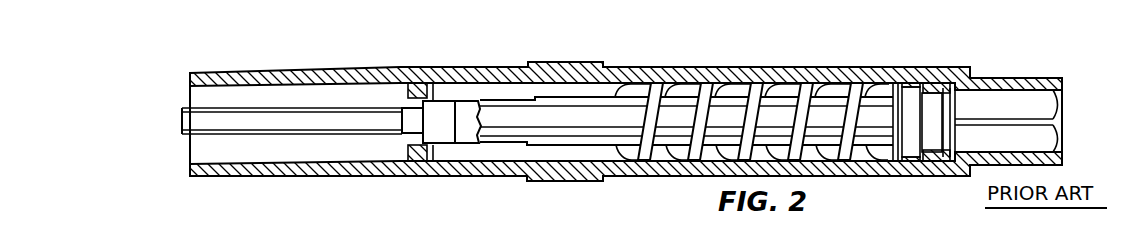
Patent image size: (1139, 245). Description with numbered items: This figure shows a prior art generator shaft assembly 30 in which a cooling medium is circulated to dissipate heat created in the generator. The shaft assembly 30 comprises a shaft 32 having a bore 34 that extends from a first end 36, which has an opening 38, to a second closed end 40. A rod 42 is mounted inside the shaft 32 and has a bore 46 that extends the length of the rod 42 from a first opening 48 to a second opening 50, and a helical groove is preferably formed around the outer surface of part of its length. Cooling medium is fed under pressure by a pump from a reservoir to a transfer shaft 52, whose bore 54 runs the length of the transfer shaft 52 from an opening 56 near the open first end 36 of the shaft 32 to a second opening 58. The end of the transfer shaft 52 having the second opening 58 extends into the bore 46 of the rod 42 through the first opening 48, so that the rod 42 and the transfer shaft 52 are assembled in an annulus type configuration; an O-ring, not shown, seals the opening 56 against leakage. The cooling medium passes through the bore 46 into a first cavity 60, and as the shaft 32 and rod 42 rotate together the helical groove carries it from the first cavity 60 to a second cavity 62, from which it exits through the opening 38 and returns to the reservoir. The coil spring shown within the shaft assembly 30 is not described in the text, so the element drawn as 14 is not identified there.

The shaft assembly 30 is at (186, 60).
The shaft 32 is at (228, 73).
The second cavity 62 is at (277, 92).
The bore 34 is at (290, 153).
The first end 36 is at (190, 177).
The opening 38 is at (189, 157).
The transfer shaft 52 is at (210, 108).
The bore 54 is at (343, 122).
The opening 56 is at (182, 125).
The first opening 48 is at (395, 108).
The second opening 58 is at (432, 102).
The bore 46 is at (463, 117).
The rod 42 is at (493, 142).
The coil spring 14 is at (688, 90).
The second opening 50 is at (930, 90).
The first cavity 60 is at (1020, 98).
The second closed end 40 is at (1063, 137).